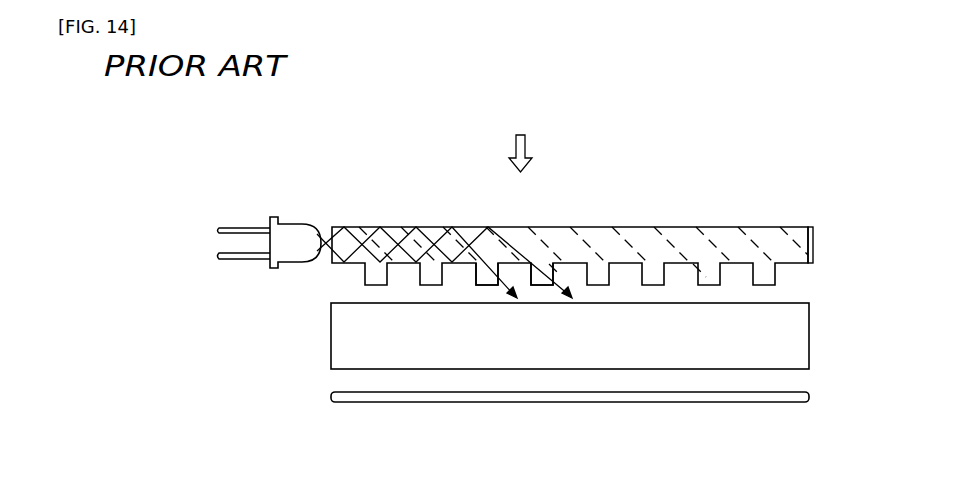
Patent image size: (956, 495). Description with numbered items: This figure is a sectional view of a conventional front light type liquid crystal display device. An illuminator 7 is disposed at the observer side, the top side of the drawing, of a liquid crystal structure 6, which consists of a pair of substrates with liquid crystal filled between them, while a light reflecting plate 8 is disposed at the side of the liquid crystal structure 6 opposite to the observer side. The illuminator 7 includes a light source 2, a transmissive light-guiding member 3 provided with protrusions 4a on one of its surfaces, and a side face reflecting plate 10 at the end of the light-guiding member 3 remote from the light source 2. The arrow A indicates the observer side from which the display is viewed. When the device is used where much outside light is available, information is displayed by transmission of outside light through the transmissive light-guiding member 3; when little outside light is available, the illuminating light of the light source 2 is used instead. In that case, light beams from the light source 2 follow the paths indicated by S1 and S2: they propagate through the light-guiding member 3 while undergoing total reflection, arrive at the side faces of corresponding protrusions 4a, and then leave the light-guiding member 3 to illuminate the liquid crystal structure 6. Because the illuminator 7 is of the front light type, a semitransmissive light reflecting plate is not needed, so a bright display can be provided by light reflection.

The light source 2 is at (287, 235).
The transmissive light-guiding member 3 is at (687, 228).
The protrusions 4a is at (533, 287).
The liquid crystal structure 6 is at (800, 348).
The illuminator 7 is at (618, 246).
The light reflecting plate 8 is at (580, 403).
The side face reflecting plate 10 is at (816, 247).
The light beam path S1 is at (392, 224).
The light beam path S2 is at (456, 224).
The viewing direction A is at (520, 139).